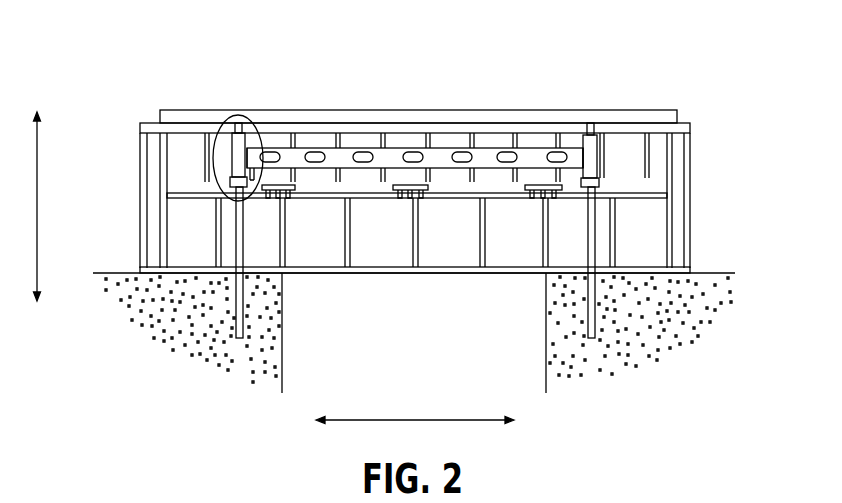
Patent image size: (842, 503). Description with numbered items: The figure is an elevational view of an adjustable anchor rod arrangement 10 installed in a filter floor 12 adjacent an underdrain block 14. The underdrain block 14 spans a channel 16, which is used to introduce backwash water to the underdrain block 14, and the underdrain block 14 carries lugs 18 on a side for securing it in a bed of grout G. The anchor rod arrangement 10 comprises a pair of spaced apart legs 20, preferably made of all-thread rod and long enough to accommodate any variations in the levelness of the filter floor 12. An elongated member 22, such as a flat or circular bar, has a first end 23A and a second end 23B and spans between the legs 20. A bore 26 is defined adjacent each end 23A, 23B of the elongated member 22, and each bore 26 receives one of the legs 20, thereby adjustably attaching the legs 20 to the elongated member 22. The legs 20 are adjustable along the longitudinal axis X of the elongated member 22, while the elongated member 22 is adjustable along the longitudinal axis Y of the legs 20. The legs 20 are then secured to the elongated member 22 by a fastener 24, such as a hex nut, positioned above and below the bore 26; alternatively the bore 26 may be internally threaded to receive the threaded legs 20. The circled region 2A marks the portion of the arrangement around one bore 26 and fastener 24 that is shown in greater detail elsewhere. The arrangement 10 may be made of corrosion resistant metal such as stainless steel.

The detail view region 2A is at (214, 137).
The bore 26 is at (229, 116).
The first end 23A is at (249, 145).
The second end 23B is at (582, 143).
The elongated member 22 is at (395, 152).
The fastener 24 is at (599, 178).
The legs 20 is at (594, 228).
The filter floor 12 is at (705, 272).
The underdrain block 14 is at (167, 177).
The adjustable anchor rod arrangement 10 is at (237, 235).
The lugs 18 is at (393, 192).
The channel 16 is at (420, 363).
The grout G is at (205, 332).
The longitudinal axis of the elongated member X is at (415, 420).
The longitudinal axis of the legs Y is at (37, 200).